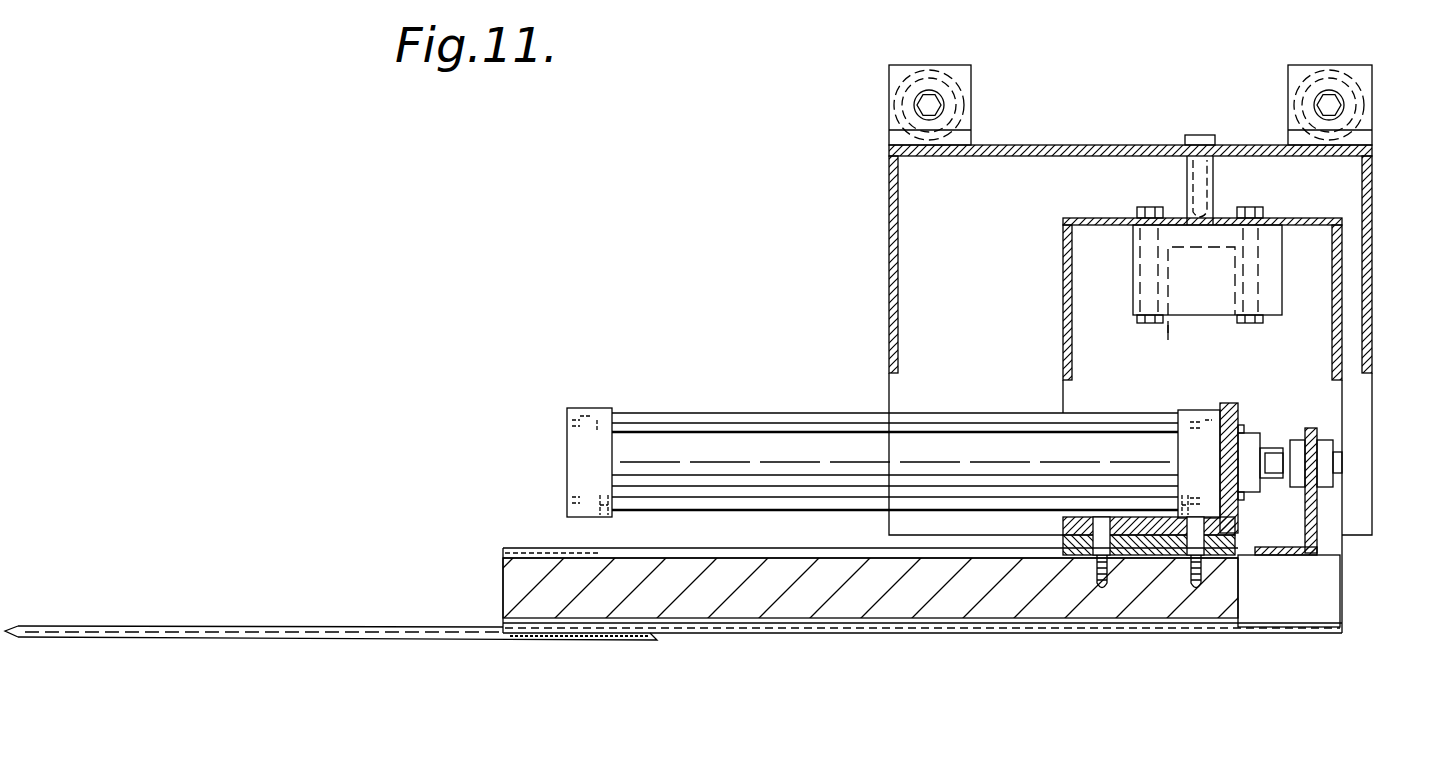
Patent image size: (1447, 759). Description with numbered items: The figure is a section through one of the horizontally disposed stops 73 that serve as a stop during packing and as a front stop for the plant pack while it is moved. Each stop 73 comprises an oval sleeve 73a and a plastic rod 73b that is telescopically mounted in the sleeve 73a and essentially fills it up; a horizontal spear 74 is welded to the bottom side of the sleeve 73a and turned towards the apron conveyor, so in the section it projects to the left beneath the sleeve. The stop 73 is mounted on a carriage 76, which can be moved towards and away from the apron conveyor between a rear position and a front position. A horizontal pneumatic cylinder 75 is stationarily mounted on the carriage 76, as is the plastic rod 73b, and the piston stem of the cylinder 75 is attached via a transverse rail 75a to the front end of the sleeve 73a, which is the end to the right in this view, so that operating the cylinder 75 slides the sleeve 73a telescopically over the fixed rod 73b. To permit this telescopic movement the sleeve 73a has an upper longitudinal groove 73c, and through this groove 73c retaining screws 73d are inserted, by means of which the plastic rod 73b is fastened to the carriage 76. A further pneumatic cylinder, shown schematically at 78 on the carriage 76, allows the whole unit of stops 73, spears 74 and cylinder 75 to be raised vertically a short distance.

The stop 73 is at (922, 609).
The oval sleeve 73a is at (1022, 634).
The plastic rod 73b is at (935, 600).
The upper longitudinal groove 73c is at (605, 546).
The retaining screws 73d is at (1210, 568).
The horizontal spear 74 is at (321, 627).
The horizontal pneumatic cylinder 75 is at (988, 412).
The transverse rail 75a is at (1320, 510).
The carriage 76 is at (1372, 188).
The pneumatic cylinder 78 is at (1222, 316).